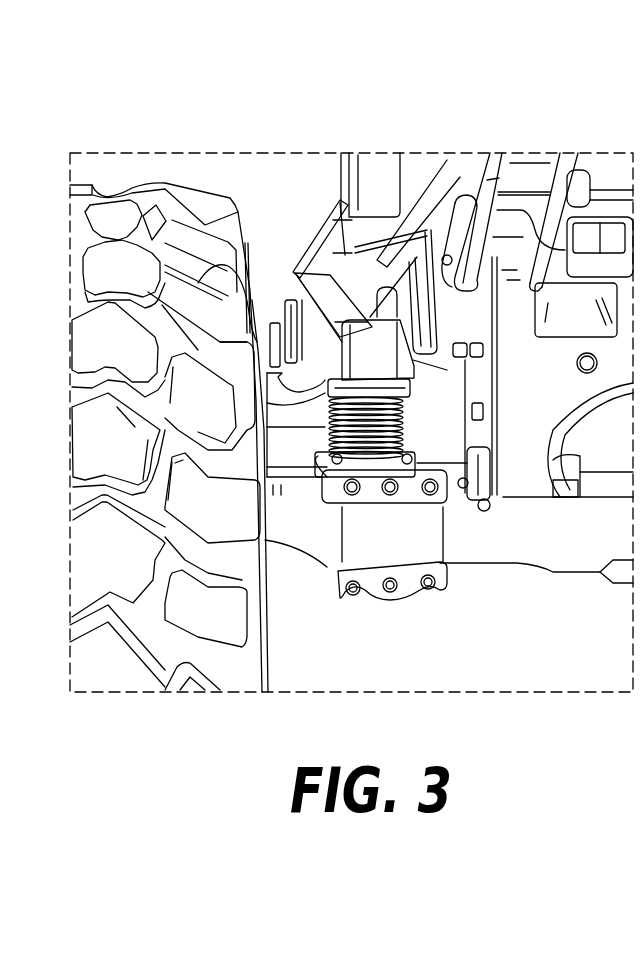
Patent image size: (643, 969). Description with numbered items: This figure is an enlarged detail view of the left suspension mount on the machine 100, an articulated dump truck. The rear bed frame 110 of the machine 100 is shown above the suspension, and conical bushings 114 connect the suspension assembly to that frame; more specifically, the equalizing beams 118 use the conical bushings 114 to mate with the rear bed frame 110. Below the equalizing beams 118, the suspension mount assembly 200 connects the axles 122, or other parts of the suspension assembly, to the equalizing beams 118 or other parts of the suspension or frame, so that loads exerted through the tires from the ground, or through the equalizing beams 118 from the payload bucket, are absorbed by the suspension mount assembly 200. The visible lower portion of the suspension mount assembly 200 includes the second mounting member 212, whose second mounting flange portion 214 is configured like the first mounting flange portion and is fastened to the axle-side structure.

The machine 100 is at (509, 82).
The rear bed frame 110 is at (447, 228).
The conical bushings 114 is at (284, 322).
The equalizing beams 118 is at (297, 270).
The axles 122 is at (472, 538).
The suspension mount assembly 200 is at (363, 529).
The second mounting member 212 is at (407, 463).
The second mounting flange portion 214 is at (367, 463).